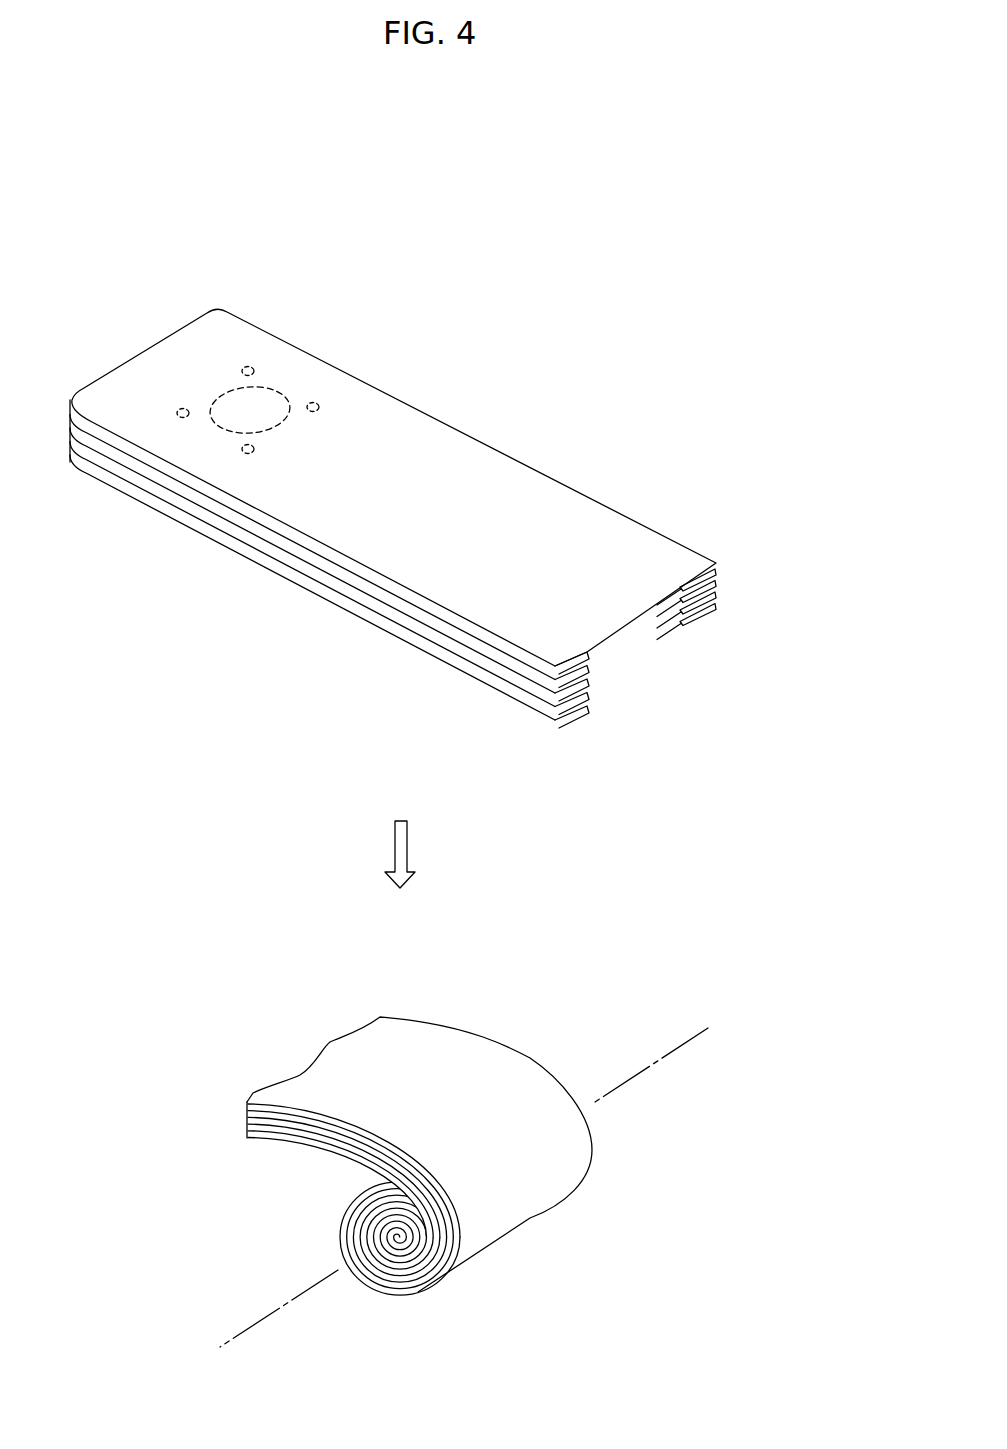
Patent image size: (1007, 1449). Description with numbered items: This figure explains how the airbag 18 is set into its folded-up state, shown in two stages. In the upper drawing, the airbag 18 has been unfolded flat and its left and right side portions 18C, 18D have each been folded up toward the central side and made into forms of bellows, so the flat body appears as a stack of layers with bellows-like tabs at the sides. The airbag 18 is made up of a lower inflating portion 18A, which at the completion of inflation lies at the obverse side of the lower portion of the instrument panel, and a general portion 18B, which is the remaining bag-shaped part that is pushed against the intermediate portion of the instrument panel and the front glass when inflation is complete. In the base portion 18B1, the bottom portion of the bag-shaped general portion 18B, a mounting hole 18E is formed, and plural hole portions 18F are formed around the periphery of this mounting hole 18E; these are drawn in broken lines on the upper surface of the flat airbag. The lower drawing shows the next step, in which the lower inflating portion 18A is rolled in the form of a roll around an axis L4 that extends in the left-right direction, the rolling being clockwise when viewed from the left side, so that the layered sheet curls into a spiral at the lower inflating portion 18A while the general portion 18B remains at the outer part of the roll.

The airbag 18 is at (437, 288).
The lower inflating portion 18A is at (603, 547).
The general portion 18B is at (306, 343).
The base portion 18B1 is at (178, 373).
The left side portion 18C is at (538, 713).
The right side portion 18D is at (718, 588).
The mounting hole 18E is at (252, 387).
The hole portions 18F is at (247, 366).
The axis L4 is at (693, 1033).